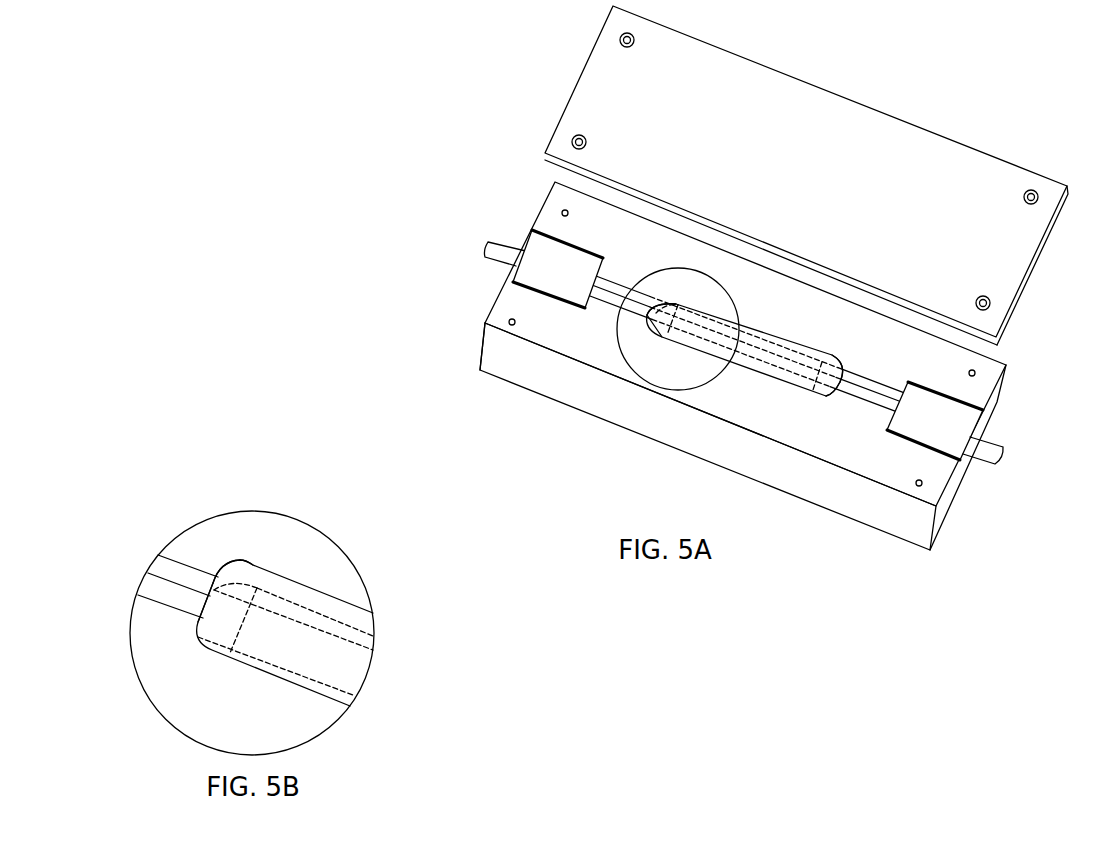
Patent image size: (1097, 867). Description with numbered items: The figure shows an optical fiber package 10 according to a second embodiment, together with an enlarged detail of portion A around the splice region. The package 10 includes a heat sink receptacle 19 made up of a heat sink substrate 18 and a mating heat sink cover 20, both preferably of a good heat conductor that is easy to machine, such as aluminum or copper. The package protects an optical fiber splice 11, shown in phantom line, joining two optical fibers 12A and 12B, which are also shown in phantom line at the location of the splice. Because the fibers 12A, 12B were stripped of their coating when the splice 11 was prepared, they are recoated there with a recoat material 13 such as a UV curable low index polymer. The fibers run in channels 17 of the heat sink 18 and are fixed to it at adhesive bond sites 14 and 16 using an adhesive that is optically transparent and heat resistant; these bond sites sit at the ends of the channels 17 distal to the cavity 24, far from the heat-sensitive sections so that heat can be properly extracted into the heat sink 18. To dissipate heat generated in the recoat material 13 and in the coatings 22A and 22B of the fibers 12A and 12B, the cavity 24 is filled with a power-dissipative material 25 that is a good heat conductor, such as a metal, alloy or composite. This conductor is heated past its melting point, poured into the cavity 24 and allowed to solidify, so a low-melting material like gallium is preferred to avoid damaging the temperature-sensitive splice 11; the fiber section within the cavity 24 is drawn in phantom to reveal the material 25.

In FIG. 5A, the optical fiber package 10 is at (427, 242).
In FIG. 5A, the optical fiber splice 11 is at (737, 345).
In FIG. 5A, the optical fiber 12A is at (685, 327).
In FIG. 5B, the optical fiber 12A is at (320, 658).
In FIG. 5A, the optical fiber 12B is at (805, 372).
In FIG. 5A, the recoat material 13 is at (750, 326).
In FIG. 5B, the recoat material 13 is at (340, 607).
In FIG. 5A, the adhesive bond site 14 is at (555, 270).
In FIG. 5A, the adhesive bond site 16 is at (928, 413).
In FIG. 5A, the channels 17 is at (613, 278).
In FIG. 5B, the channels 17 is at (160, 557).
In FIG. 5A, the heat sink substrate 18 is at (478, 360).
In FIG. 5A, the heat sink receptacle 19 is at (1035, 282).
In FIG. 5A, the heat sink cover 20 is at (545, 154).
In FIG. 5A, the coating 22A is at (612, 297).
In FIG. 5B, the coating 22A is at (206, 617).
In FIG. 5A, the coating 22B is at (865, 395).
In FIG. 5A, the cavity 24 is at (673, 300).
In FIG. 5B, the cavity 24 is at (242, 572).
In FIG. 5A, the power-dissipative material 25 is at (838, 355).
In FIG. 5B, the power-dissipative material 25 is at (283, 573).
In FIG. 5A, the portion A is at (663, 268).
In FIG. 5B, the portion A is at (252, 633).